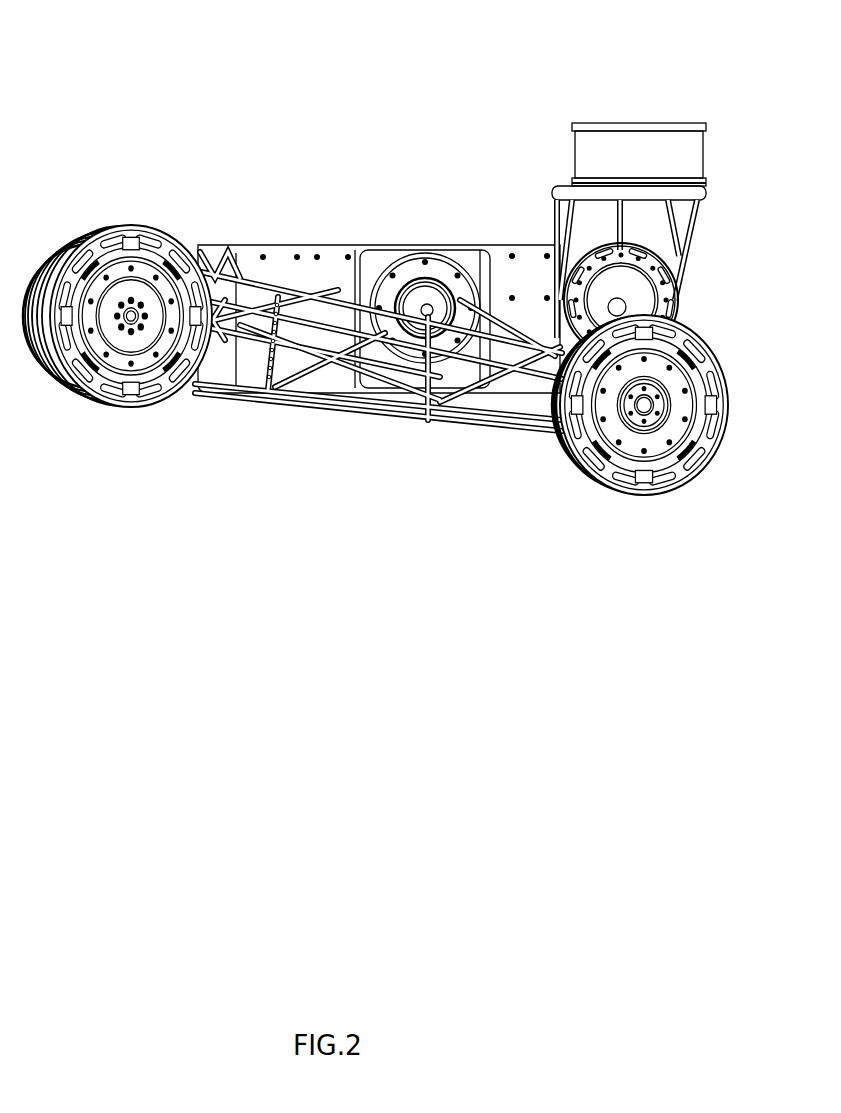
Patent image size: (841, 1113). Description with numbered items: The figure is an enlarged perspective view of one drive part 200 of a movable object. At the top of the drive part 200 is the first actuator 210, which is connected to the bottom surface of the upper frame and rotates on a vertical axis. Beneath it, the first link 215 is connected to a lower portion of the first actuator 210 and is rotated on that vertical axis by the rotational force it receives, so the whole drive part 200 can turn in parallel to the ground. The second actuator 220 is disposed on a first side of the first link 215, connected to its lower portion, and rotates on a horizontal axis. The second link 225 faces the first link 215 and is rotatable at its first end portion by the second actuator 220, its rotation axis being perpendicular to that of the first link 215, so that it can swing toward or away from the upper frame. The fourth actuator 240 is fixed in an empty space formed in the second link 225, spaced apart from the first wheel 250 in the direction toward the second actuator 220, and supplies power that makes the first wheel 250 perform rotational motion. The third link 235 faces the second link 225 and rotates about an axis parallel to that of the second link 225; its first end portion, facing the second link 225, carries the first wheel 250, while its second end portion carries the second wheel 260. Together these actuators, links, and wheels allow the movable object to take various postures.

The drive part 200 is at (287, 168).
The first actuator 210 is at (666, 147).
The first link 215 is at (703, 191).
The second actuator 220 is at (648, 303).
The second link 225 is at (345, 243).
The third link 235 is at (267, 402).
The fourth actuator 240 is at (467, 245).
The first wheel 250 is at (105, 404).
The second wheel 260 is at (630, 485).